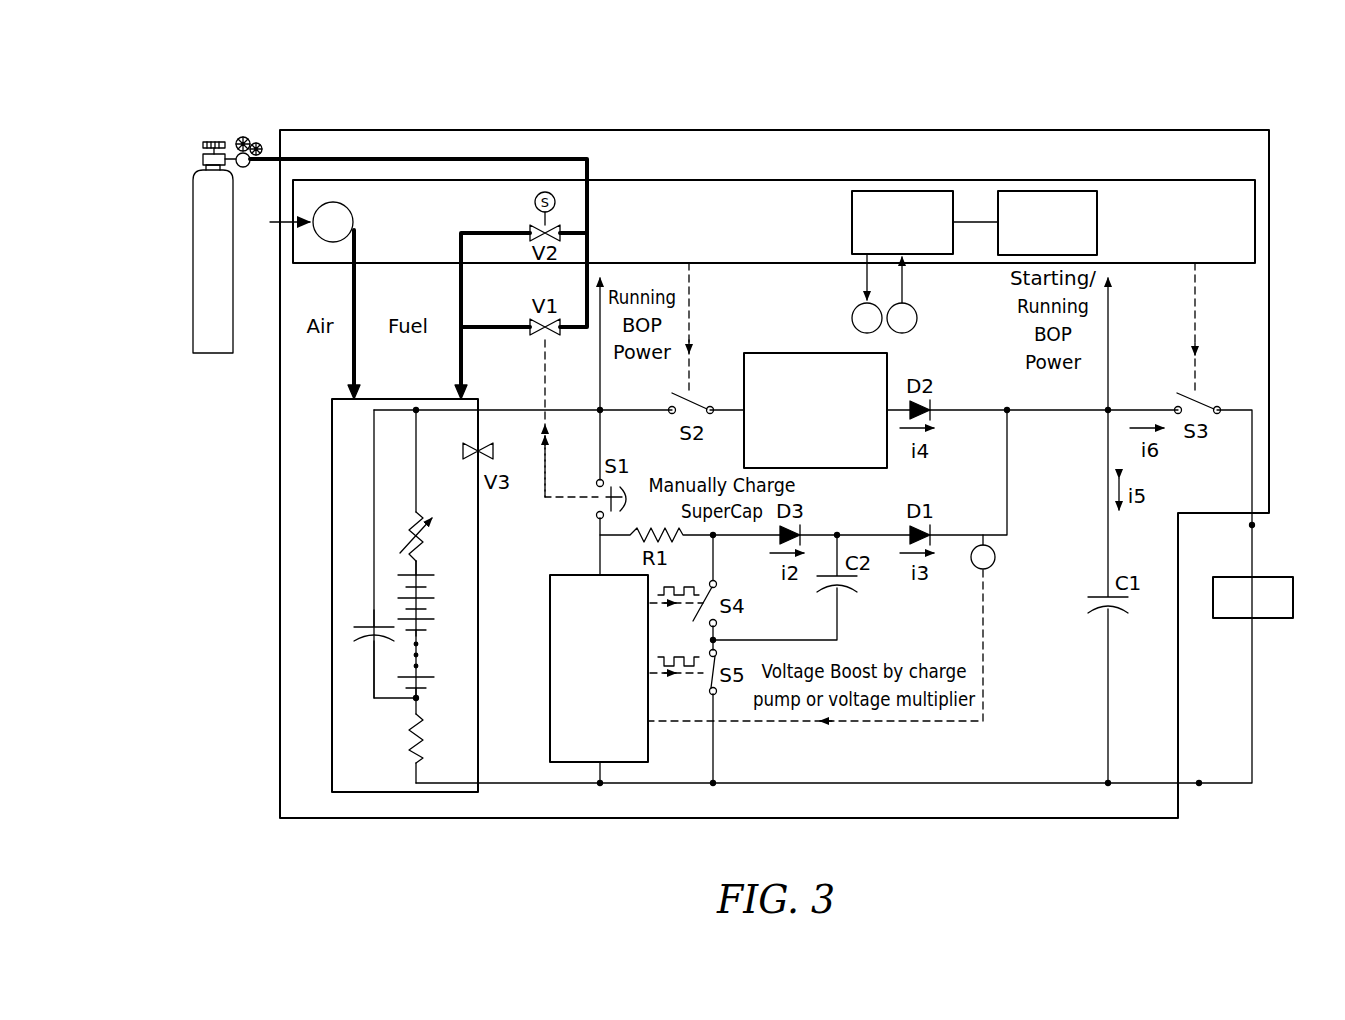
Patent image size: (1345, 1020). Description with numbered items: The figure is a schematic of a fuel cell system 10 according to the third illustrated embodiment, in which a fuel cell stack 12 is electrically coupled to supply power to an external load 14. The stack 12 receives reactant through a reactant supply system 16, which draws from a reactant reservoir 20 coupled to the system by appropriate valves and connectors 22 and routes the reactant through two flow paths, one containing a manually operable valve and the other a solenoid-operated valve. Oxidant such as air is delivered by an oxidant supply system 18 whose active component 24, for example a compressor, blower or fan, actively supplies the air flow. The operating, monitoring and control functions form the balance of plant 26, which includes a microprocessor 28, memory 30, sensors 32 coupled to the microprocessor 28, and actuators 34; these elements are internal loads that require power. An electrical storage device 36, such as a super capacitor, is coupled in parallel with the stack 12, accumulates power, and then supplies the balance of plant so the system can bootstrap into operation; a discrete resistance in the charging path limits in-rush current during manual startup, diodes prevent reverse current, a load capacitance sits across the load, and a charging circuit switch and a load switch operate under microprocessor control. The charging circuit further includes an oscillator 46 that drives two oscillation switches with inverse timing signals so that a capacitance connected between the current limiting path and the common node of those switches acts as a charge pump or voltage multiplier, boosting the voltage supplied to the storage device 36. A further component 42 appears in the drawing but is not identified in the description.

The fuel cell system 10 is at (281, 542).
The fuel cell stack 12 is at (332, 740).
The external load 14 is at (1270, 577).
The reactant supply system 16 is at (615, 158).
The oxidant supply system 18 is at (294, 345).
The reactant reservoir 20 is at (205, 353).
The valves and connectors 22 is at (258, 122).
The active component 24 is at (353, 215).
The balance of plant 26 is at (757, 180).
The microprocessor 28 is at (852, 222).
The memory 30 is at (1097, 222).
The sensors 32 is at (917, 318).
The actuators 34 is at (852, 318).
The electrical storage device 36 is at (815, 468).
The voltage meter 42 is at (996, 557).
The oscillator 46 is at (548, 712).